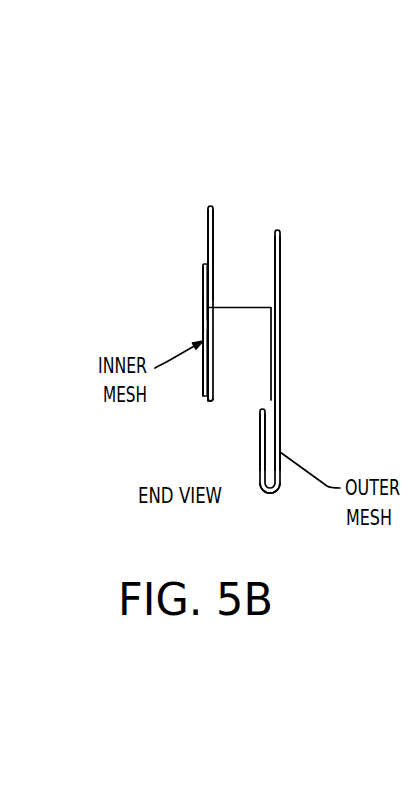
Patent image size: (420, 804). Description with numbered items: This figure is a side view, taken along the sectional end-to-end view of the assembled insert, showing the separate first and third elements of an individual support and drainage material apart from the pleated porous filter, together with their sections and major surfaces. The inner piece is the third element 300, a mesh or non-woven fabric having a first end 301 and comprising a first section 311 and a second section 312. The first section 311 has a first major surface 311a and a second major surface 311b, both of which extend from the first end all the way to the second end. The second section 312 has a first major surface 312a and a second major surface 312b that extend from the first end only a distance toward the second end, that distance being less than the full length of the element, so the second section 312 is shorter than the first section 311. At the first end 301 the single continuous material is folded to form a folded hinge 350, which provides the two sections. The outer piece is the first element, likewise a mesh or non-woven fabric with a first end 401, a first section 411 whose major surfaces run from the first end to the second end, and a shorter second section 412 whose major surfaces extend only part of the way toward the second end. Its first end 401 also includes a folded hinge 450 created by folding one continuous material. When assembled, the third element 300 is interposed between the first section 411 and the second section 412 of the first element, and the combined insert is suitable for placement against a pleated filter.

The third element 300 is at (182, 200).
The first section 311 is at (213, 222).
The first major surface 311a is at (208, 238).
The second major surface 311b is at (213, 251).
The second section 312 is at (203, 329).
The first major surface 312a is at (203, 290).
The second major surface 312b is at (213, 332).
The first end 301 is at (204, 393).
The folded hinge 350 is at (207, 402).
The first end 401 is at (261, 492).
The first section 411 is at (281, 277).
The second section 412 is at (259, 455).
The folded hinge 450 is at (272, 494).